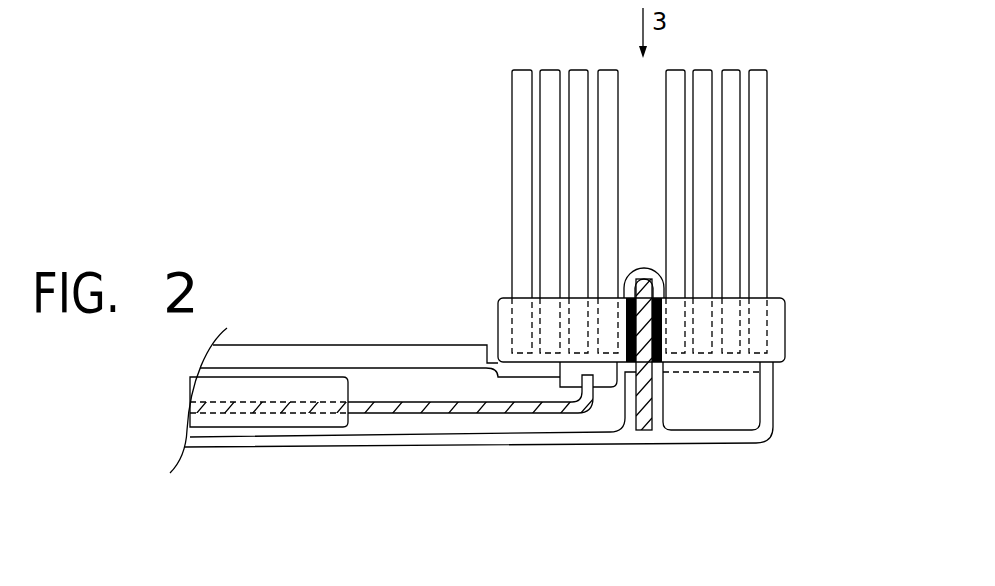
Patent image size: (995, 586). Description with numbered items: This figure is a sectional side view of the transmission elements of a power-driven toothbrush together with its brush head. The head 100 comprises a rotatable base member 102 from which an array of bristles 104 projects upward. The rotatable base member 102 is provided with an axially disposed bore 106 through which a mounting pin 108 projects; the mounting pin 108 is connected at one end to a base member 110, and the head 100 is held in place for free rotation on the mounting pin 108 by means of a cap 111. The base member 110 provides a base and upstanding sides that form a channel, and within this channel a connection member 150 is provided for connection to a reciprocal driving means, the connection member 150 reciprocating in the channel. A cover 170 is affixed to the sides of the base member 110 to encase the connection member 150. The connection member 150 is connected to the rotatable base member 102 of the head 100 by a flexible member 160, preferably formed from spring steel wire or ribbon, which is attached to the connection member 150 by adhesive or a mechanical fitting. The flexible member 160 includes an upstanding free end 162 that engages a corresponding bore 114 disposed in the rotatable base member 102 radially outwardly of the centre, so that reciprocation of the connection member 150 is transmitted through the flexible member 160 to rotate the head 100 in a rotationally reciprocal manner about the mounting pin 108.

The head 100 is at (688, 215).
The rotatable base member 102 is at (785, 321).
The bristles 104 is at (767, 80).
The bore 106 is at (668, 354).
The mounting pin 108 is at (645, 431).
The base member 110 is at (446, 436).
The cap 111 is at (648, 266).
The bore 114 is at (573, 381).
The connection member 150 is at (203, 427).
The flexible member 160 is at (358, 406).
The free end 162 is at (580, 391).
The cover 170 is at (260, 356).